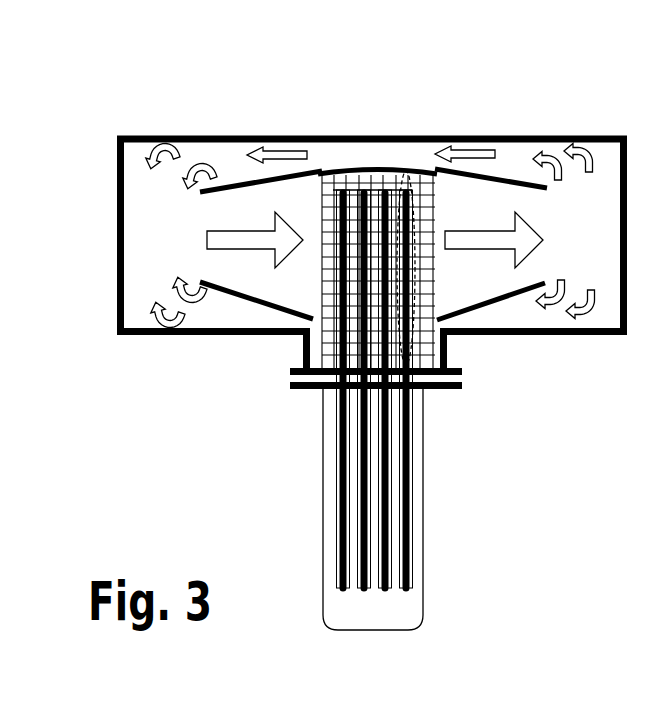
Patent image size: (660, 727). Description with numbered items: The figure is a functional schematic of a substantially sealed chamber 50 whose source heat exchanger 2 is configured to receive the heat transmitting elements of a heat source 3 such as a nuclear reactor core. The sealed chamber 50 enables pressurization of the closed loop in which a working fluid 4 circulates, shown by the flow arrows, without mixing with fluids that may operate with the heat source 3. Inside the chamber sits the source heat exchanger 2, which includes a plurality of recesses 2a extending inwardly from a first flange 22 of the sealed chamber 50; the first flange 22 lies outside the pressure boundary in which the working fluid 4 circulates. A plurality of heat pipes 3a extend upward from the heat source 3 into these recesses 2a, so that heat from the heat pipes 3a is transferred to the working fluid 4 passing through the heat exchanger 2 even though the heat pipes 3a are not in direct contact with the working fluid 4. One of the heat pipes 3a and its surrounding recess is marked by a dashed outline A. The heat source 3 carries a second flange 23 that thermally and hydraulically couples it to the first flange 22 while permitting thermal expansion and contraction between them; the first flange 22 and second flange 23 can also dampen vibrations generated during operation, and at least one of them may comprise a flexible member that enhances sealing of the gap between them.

The sealed chamber 50 is at (147, 126).
The working fluid 4 is at (278, 135).
The source heat exchanger 2 is at (351, 135).
The recesses 2a is at (333, 342).
The detail region A is at (407, 172).
The first flange 22 is at (461, 372).
The second flange 23 is at (312, 390).
The heat pipes 3a is at (407, 462).
The heat source 3 is at (413, 597).